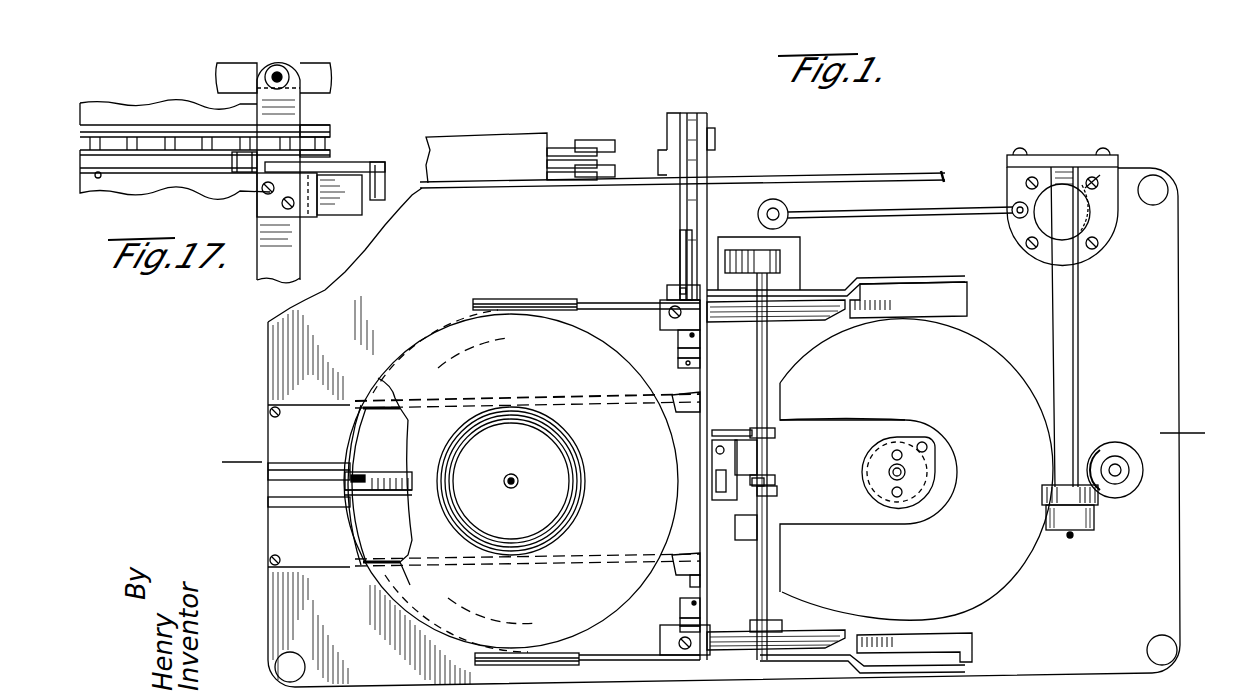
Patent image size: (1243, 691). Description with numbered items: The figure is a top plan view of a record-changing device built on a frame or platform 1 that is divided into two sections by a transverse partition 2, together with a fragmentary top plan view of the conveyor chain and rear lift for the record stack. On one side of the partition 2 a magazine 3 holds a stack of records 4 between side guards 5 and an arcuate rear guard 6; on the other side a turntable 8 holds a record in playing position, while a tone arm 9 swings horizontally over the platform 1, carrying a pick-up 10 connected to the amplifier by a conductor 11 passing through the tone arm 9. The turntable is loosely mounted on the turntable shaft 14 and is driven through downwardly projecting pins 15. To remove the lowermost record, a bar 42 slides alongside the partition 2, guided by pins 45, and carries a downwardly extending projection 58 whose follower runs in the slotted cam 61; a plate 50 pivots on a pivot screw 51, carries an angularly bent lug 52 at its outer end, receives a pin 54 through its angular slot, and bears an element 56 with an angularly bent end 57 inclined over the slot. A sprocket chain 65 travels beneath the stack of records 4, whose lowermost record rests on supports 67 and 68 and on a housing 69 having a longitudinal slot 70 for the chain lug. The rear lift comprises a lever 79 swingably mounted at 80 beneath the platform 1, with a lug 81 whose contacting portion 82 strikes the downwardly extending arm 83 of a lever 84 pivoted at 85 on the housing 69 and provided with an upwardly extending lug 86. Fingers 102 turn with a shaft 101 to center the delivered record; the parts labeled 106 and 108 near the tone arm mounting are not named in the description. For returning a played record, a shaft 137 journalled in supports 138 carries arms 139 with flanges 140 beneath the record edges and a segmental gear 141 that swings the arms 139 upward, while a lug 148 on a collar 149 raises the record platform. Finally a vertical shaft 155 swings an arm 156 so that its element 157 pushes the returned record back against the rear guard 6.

In FIG. 1, the frame or platform 1 is at (1166, 266).
In FIG. 1, the transverse partition 2 is at (708, 352).
In FIG. 1, the magazine 3 is at (406, 336).
In FIG. 1, the stack of records 4 is at (415, 593).
In FIG. 1, the side guards 5 is at (520, 300).
In FIG. 1, the rear guard 6 is at (348, 533).
In FIG. 1, the turntable 8 is at (990, 357).
In FIG. 1, the tone arm 9 is at (1080, 303).
In FIG. 1, the pick-up 10 is at (1095, 530).
In FIG. 1, the conductor 11 is at (1100, 192).
In FIG. 1, the turntable shaft 14 is at (888, 472).
In FIG. 1, the downwardly projecting pins 15 is at (890, 493).
In FIG. 1, the bar 42 is at (700, 293).
In FIG. 1, the pins 45 is at (692, 578).
In FIG. 1, the plate 50 is at (670, 320).
In FIG. 1, the pivot screw 51 is at (680, 300).
In FIG. 1, the angularly bent lug 52 is at (688, 405).
In FIG. 1, the pin 54 is at (696, 356).
In FIG. 1, the element 56 is at (680, 336).
In FIG. 1, the angularly bent end 57 is at (682, 350).
In FIG. 1, the downwardly extending projection 58 is at (700, 165).
In FIG. 1, the cam 61 is at (713, 140).
In FIG. 17, the sprocket chain 65 is at (330, 130).
In FIG. 1, the sprocket chain 65 is at (381, 496).
In FIG. 1, the support 67 is at (398, 398).
In FIG. 1, the support 68 is at (380, 565).
In FIG. 17, the housing 69 is at (150, 128).
In FIG. 1, the housing 69 is at (348, 495).
In FIG. 17, the longitudinal slot 70 is at (192, 156).
In FIG. 17, the lever 79 is at (265, 258).
In FIG. 17, the lever pivot mounting 80 is at (290, 77).
In FIG. 17, the lug 81 is at (342, 205).
In FIG. 17, the contacting portion 82 is at (345, 200).
In FIG. 17, the downwardly extending arm 83 is at (370, 162).
In FIG. 17, the lever 84 is at (150, 175).
In FIG. 1, the lever 84 is at (386, 478).
In FIG. 17, the lever pivot 85 is at (98, 178).
In FIG. 17, the upwardly extending lug 86 is at (244, 172).
In FIG. 1, the upwardly extending lug 86 is at (358, 474).
In FIG. 1, the shaft 101 is at (730, 440).
In FIG. 1, the fingers 102 is at (725, 430).
In FIG. 1, the bearing block 106 is at (1045, 180).
In FIG. 1, the pivot pin 108 is at (1040, 205).
In FIG. 1, the shaft 137 is at (757, 375).
In FIG. 1, the supports 138 is at (795, 320).
In FIG. 1, the arms 139 is at (845, 290).
In FIG. 1, the flanges 140 is at (968, 306).
In FIG. 1, the segmental gear 141 is at (745, 250).
In FIG. 1, the lug 148 is at (777, 472).
In FIG. 1, the collar 149 is at (760, 458).
In FIG. 1, the shaft 155 is at (774, 199).
In FIG. 1, the arm 156 is at (860, 216).
In FIG. 1, the element 157 is at (1014, 216).